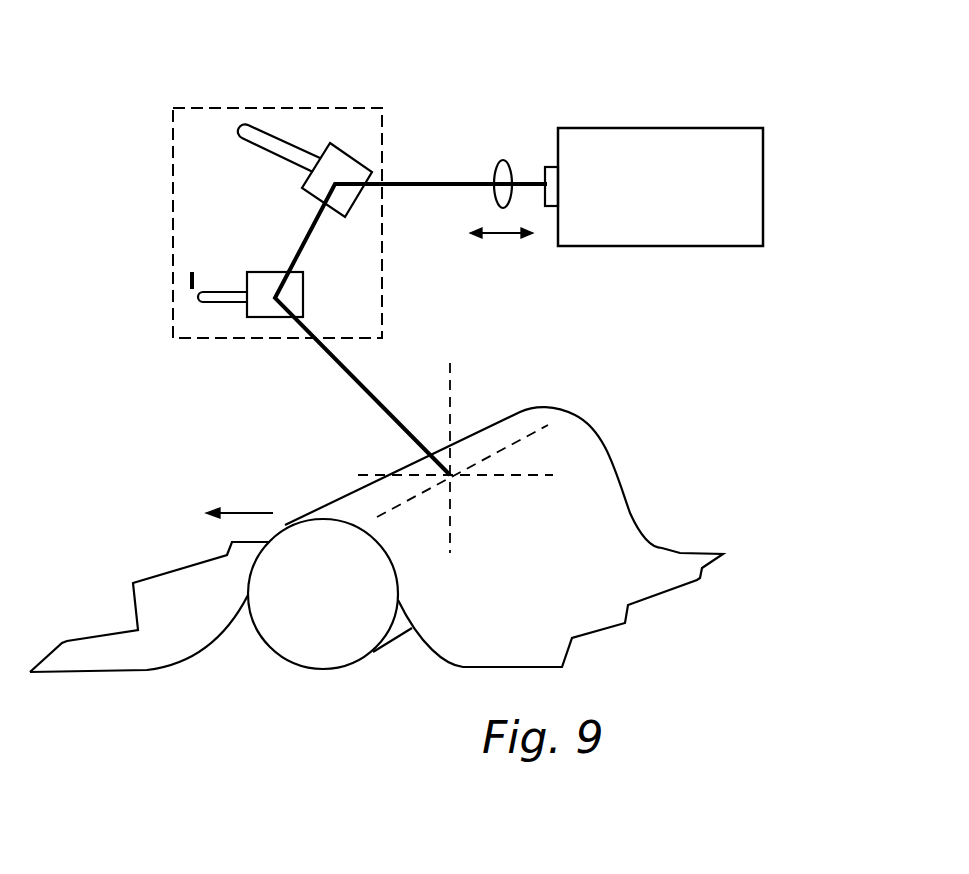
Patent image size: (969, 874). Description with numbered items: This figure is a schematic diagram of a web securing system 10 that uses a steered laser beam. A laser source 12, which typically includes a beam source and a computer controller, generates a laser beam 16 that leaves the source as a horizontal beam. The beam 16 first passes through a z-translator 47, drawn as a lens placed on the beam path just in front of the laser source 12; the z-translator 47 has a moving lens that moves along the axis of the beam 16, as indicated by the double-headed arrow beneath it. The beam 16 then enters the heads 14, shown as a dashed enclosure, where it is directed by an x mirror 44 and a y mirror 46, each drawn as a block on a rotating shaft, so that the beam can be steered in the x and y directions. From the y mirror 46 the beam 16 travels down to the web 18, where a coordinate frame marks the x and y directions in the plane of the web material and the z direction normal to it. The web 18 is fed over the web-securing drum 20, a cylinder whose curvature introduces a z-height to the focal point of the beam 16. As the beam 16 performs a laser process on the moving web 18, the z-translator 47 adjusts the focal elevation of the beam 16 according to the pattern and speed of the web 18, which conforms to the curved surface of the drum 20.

The web-securing system 10 is at (226, 78).
The laser source 12 is at (641, 247).
The heads 14 is at (290, 340).
The laser beam 16 is at (418, 184).
The web 18 is at (642, 568).
The web-securing drum 20 is at (290, 640).
The x mirror 44 is at (331, 143).
The y mirror 46 is at (303, 290).
The z-translator 47 is at (507, 161).